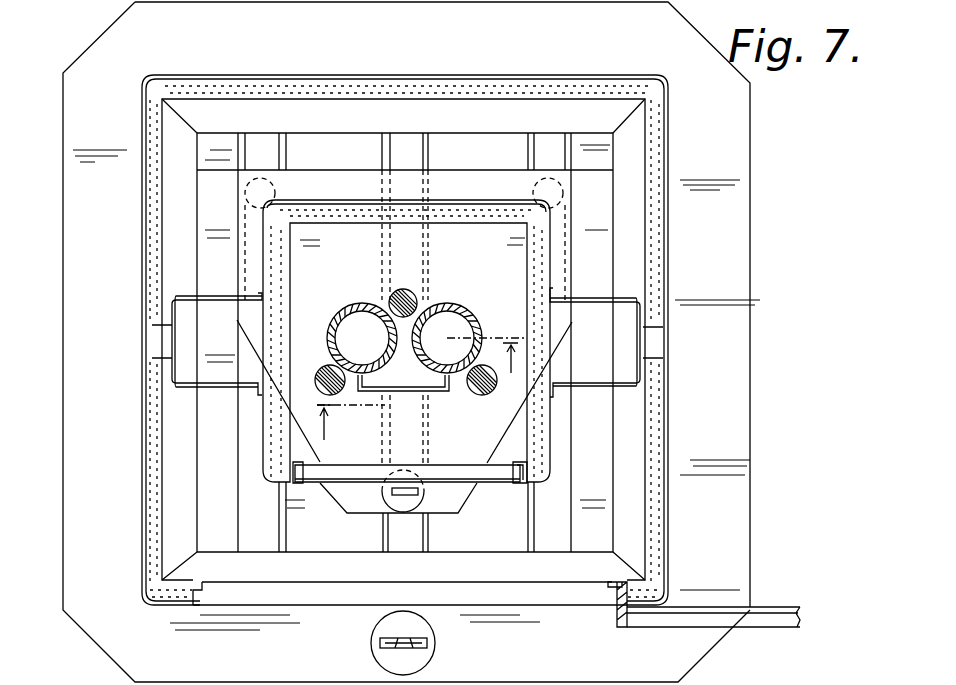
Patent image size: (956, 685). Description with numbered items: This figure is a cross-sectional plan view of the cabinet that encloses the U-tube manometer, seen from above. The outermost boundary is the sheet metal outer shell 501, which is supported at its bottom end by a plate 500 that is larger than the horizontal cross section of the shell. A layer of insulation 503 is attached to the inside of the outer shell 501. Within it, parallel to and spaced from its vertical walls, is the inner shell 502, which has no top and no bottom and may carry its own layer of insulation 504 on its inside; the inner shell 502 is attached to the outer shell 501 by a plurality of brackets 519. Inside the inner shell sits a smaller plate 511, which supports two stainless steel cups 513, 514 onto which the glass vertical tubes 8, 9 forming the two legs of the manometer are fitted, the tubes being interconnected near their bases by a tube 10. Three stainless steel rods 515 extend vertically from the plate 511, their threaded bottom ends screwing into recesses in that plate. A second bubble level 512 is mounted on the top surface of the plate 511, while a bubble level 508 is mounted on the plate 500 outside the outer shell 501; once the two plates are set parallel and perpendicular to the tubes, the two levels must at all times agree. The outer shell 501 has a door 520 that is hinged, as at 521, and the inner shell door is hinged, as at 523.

The plate 500 is at (717, 637).
The outer shell 501 is at (670, 386).
The inner shell 502 is at (548, 440).
The layer of insulation 503 is at (658, 423).
The layer of insulation 504 is at (634, 248).
The bubble level 508 is at (436, 645).
The plate 511 is at (341, 455).
The second bubble level 512 is at (428, 503).
The stainless steel cup 513 is at (355, 308).
The stainless steel cup 514 is at (451, 306).
The stainless steel rods 515 is at (416, 294).
The brackets 519 is at (180, 300).
The door 520 is at (217, 598).
The hinge 521 is at (615, 612).
The hinge 523 is at (522, 484).
The vertical tube 8 is at (368, 306).
The vertical tube 9 is at (469, 320).
The tube 10 is at (445, 396).